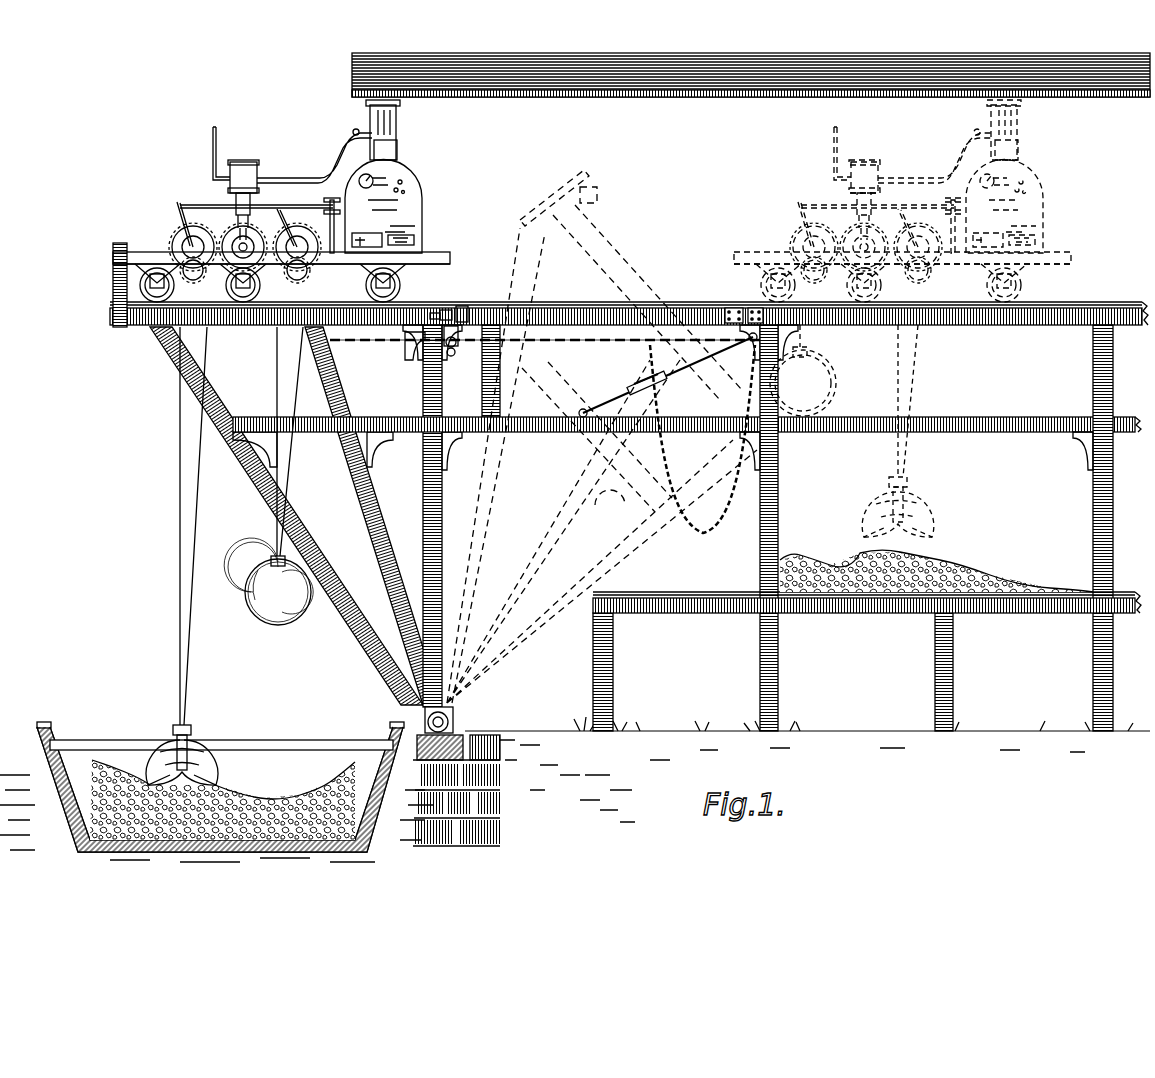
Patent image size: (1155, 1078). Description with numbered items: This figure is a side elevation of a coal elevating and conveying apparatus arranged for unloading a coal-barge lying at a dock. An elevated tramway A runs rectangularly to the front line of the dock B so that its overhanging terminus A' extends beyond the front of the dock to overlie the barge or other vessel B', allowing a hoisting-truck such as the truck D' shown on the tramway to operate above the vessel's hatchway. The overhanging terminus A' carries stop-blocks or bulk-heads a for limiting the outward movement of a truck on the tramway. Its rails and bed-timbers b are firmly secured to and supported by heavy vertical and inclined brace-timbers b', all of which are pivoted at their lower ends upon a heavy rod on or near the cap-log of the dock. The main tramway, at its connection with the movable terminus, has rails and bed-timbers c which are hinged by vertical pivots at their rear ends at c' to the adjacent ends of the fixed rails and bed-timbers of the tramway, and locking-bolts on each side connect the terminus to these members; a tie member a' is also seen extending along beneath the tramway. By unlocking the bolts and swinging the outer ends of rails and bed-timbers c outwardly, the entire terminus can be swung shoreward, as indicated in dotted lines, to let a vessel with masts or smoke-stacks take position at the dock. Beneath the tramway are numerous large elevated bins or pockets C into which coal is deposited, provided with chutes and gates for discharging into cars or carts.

The elevated tramway A is at (629, 301).
The overhanging terminus A' is at (126, 297).
The hoisting engine D' is at (281, 201).
The stop-blocks or bulk-heads a is at (436, 319).
The tie rod a' is at (548, 353).
The rails and bed-timbers b is at (221, 526).
The brace-timbers b' is at (306, 516).
The dock B is at (456, 790).
The barge or other vessel B' is at (216, 789).
The rails and bed-timbers c is at (602, 436).
The vertical pivots c' is at (761, 317).
The bins or pockets C is at (867, 528).